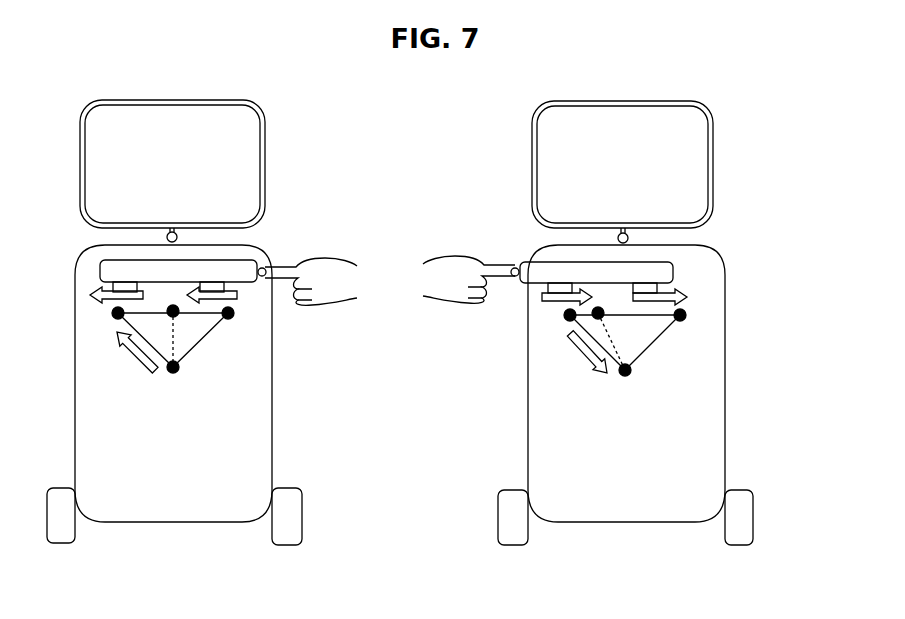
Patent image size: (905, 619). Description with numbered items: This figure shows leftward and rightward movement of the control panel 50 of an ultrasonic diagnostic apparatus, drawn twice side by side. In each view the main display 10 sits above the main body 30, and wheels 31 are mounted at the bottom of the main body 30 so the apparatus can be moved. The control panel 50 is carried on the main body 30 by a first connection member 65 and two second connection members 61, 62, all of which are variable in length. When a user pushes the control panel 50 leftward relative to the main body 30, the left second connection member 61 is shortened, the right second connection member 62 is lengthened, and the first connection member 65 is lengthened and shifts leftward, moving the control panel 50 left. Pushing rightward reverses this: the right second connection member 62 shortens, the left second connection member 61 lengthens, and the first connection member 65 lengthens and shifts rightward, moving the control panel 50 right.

The main display 10 is at (247, 148).
The main body 30 is at (258, 428).
The wheels 31 is at (293, 517).
The control panel 50 is at (268, 248).
The left second connection member 61 is at (100, 282).
The right second connection member 62 is at (203, 318).
The first connection member 65 is at (128, 352).